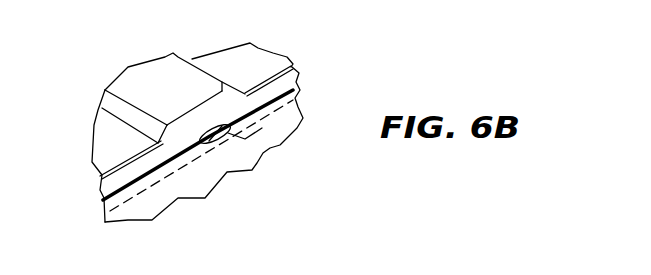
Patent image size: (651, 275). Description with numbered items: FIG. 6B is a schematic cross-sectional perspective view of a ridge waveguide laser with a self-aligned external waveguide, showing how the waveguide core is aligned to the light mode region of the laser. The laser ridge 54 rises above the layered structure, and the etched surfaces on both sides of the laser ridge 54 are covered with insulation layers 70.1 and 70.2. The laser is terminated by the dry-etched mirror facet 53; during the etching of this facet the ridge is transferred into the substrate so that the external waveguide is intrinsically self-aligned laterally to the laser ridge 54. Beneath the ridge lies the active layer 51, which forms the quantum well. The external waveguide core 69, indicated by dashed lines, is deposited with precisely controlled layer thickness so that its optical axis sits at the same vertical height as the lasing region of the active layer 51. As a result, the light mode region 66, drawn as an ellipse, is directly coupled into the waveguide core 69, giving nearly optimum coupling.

The active GaAs layer 51 is at (102, 198).
The mirror facet 53 is at (196, 123).
The laser ridge 54 is at (142, 79).
The light mode region 66 is at (217, 143).
The waveguide core 69 is at (302, 87).
The insulation layer 70.1 is at (207, 57).
The insulation layer 70.2 is at (102, 138).